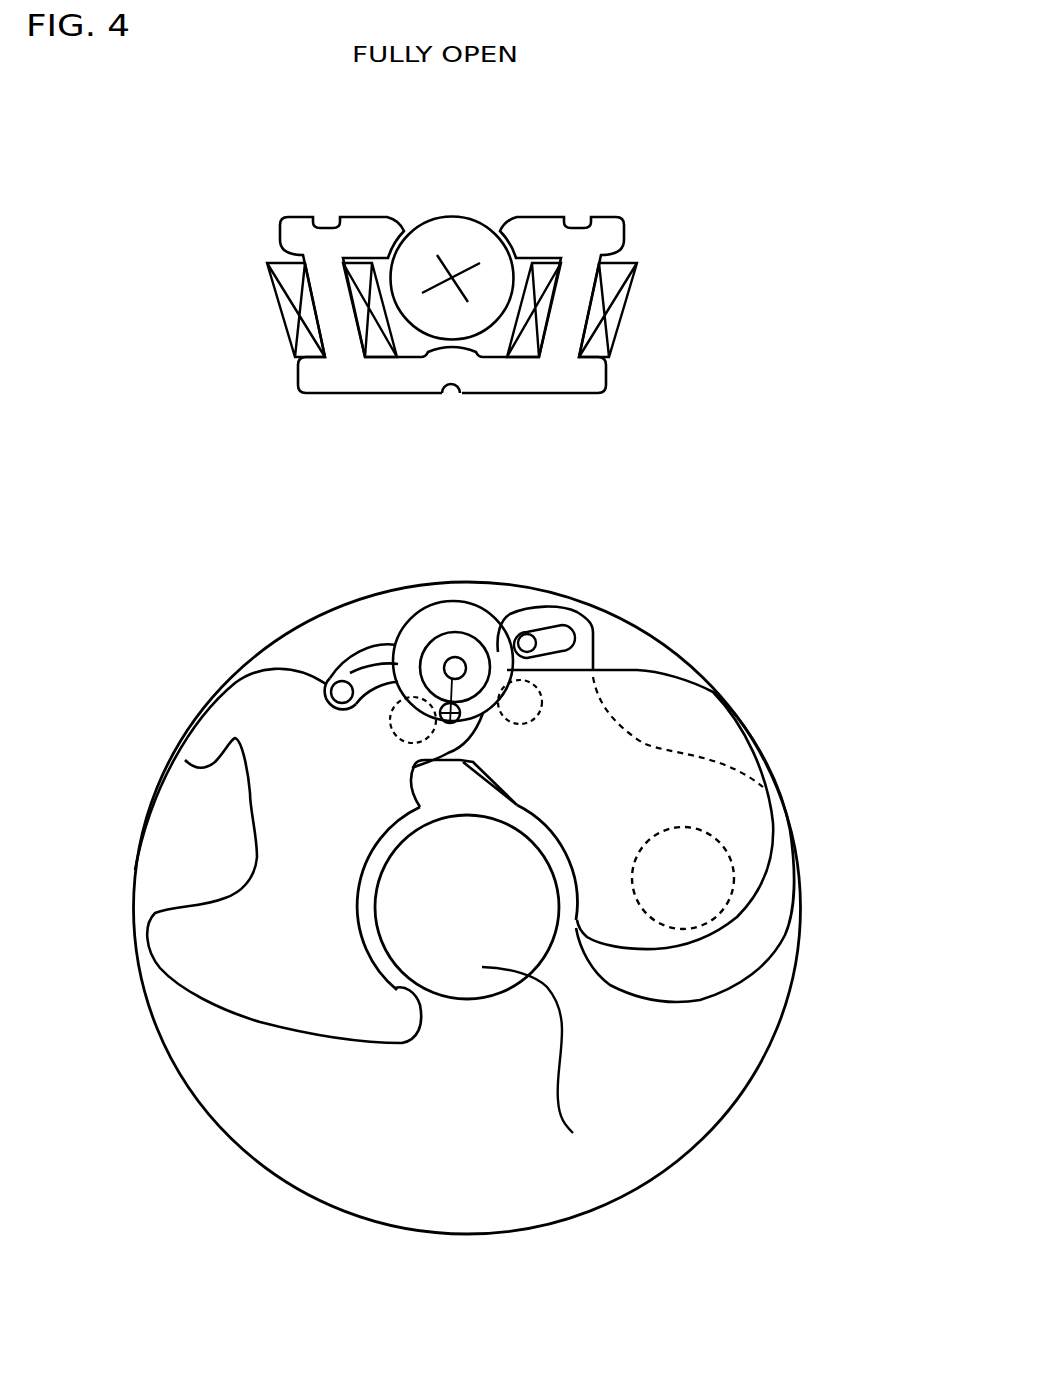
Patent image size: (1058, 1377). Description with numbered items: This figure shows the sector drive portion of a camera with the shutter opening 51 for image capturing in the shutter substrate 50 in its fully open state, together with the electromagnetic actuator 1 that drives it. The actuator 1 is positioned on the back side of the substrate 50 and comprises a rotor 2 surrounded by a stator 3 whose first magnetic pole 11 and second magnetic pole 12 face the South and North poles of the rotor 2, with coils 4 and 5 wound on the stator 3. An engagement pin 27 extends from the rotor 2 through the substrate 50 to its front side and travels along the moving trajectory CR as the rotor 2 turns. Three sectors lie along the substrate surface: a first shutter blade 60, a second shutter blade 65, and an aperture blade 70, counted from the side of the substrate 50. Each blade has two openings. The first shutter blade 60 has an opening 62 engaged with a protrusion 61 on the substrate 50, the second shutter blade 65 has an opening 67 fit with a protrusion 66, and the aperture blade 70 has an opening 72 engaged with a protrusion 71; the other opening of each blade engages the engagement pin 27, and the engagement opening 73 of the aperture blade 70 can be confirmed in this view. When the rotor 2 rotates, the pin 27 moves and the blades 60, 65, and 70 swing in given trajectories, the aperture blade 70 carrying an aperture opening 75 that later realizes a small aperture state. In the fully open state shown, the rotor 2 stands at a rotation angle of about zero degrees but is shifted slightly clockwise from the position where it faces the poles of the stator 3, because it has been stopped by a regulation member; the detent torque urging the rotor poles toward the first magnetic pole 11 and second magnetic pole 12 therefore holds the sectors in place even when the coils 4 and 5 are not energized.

The electromagnetic actuator 1 is at (550, 184).
The rotor 2 is at (437, 218).
The stator 3 is at (609, 234).
The coil 4 is at (270, 303).
The coil 5 is at (636, 308).
The first magnetic pole 11 is at (390, 233).
The second magnetic pole 12 is at (507, 230).
The engagement pin 27 is at (460, 718).
The shutter substrate 50 is at (718, 1086).
The shutter opening 51 is at (573, 1133).
The first shutter blade 60 is at (185, 760).
The protrusion 61 is at (342, 692).
The opening 62 is at (357, 667).
The second shutter blade 65 is at (698, 717).
The protrusion 66 is at (463, 662).
The opening 67 is at (457, 657).
The aperture blade 70 is at (760, 946).
The protrusion 71 is at (527, 642).
The opening 72 is at (585, 638).
The engagement opening 73 is at (428, 727).
The aperture opening 75 is at (692, 873).
The moving trajectory CR is at (453, 664).